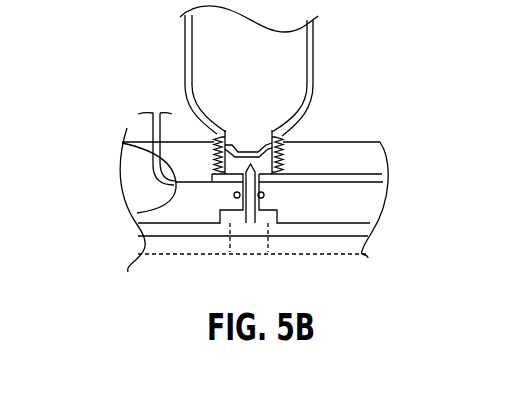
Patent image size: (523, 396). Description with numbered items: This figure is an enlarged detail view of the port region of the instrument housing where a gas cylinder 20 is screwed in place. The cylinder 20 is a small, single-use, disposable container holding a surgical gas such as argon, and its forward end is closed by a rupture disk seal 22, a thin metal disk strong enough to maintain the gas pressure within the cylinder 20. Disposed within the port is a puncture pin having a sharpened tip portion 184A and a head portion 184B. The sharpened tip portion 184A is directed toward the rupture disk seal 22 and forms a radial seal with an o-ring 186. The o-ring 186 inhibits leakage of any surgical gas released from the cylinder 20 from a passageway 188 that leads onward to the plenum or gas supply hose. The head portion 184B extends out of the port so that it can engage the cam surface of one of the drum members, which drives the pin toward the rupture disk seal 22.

The cylinder 20 is at (312, 86).
The rupture disk seal 22 is at (247, 146).
The sharpened tip portion 184A is at (283, 137).
The head portion 184B is at (261, 213).
The passageway 188 is at (137, 213).
The o-ring 186 is at (236, 198).